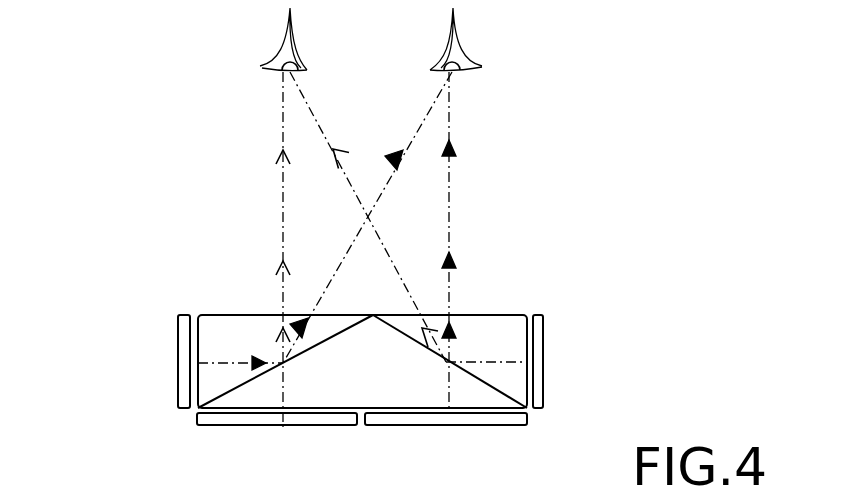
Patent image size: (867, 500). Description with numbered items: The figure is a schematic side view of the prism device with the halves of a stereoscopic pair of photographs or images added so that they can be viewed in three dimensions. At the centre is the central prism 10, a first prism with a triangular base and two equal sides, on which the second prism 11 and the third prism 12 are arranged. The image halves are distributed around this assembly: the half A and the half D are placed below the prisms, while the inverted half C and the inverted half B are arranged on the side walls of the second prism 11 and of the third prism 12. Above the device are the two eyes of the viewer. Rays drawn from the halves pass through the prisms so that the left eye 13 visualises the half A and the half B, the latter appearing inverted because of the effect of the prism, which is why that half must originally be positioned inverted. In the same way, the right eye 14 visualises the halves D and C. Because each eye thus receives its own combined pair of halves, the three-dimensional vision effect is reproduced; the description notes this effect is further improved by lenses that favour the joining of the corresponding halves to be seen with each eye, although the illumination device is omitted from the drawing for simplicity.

The central prism 10 is at (380, 363).
The second prism 11 is at (248, 338).
The third prism 12 is at (463, 347).
The left eye 13 is at (278, 55).
The right eye 14 is at (458, 48).
The half A is at (285, 420).
The inverted half B is at (545, 347).
The inverted half C is at (178, 386).
The half D is at (455, 420).